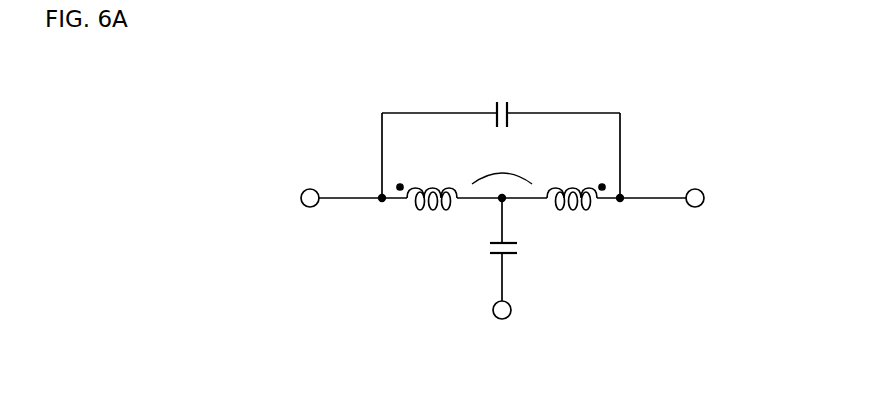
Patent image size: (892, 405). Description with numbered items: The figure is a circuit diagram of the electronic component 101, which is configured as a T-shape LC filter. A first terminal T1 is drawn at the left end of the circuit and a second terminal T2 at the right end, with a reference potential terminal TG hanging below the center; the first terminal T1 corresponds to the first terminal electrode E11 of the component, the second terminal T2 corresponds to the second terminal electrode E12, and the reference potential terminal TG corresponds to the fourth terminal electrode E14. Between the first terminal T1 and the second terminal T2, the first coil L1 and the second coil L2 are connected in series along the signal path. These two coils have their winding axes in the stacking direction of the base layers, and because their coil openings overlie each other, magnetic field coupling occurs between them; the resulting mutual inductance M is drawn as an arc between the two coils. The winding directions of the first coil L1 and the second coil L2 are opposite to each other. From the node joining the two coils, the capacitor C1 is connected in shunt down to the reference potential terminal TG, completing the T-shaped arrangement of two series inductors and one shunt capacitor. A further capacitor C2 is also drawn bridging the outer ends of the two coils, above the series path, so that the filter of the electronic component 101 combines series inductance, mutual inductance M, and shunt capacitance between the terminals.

The electronic component 101 is at (323, 62).
The first terminal T1 is at (288, 213).
The second terminal T2 is at (716, 213).
The reference potential terminal TG is at (500, 335).
The first terminal electrode E11 is at (288, 215).
The second terminal electrode E12 is at (716, 215).
The fourth terminal electrode E14 is at (500, 335).
The first coil L1 is at (427, 183).
The second coil L2 is at (576, 183).
The mutual inductance M is at (502, 165).
The capacitor C1 is at (520, 252).
The second capacitor C2 is at (492, 101).